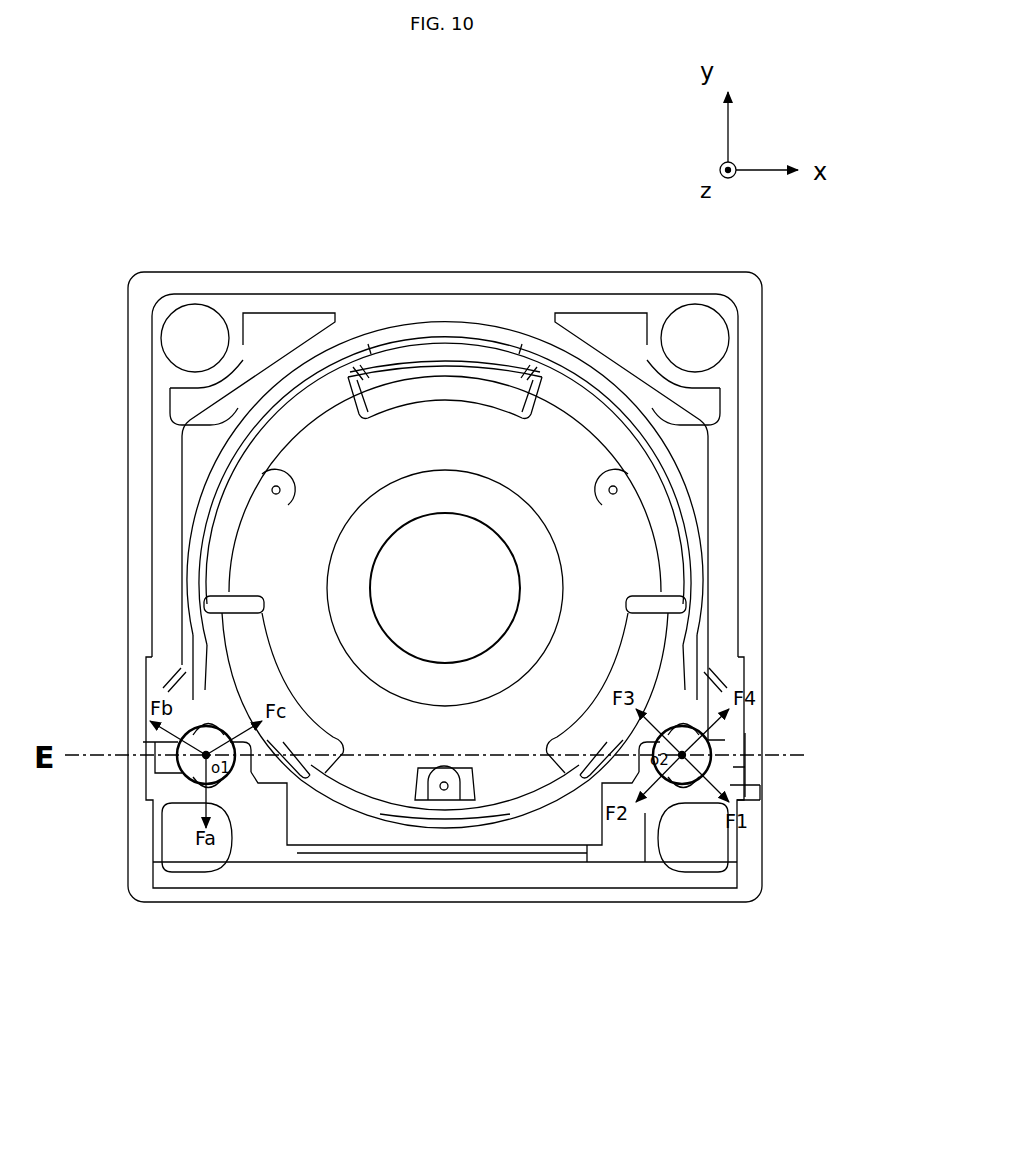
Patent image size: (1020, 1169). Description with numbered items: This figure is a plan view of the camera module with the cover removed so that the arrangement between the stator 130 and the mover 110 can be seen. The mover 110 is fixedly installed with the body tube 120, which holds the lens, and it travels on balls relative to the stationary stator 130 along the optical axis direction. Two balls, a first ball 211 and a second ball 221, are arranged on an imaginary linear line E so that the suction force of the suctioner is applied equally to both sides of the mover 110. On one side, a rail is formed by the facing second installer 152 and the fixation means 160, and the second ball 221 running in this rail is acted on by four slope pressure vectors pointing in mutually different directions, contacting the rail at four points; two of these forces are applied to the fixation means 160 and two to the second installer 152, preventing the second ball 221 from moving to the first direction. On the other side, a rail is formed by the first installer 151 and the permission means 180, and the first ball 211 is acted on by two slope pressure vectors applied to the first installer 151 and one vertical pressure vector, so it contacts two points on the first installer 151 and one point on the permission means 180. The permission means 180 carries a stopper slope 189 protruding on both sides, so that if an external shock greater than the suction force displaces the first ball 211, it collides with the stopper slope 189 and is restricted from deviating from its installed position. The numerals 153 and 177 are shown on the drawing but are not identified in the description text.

The mover 110 is at (693, 550).
The body tube 120 is at (595, 543).
The stator 130 is at (745, 798).
The first installer 151 is at (192, 705).
The second installer 152 is at (705, 690).
The bottom portion 153 is at (443, 838).
The fixation means 160 is at (678, 804).
The base portion 177 is at (593, 852).
The permission means 180 is at (178, 779).
The stopper slope 189 is at (175, 782).
The first ball 211 is at (175, 762).
The second ball 221 is at (742, 772).